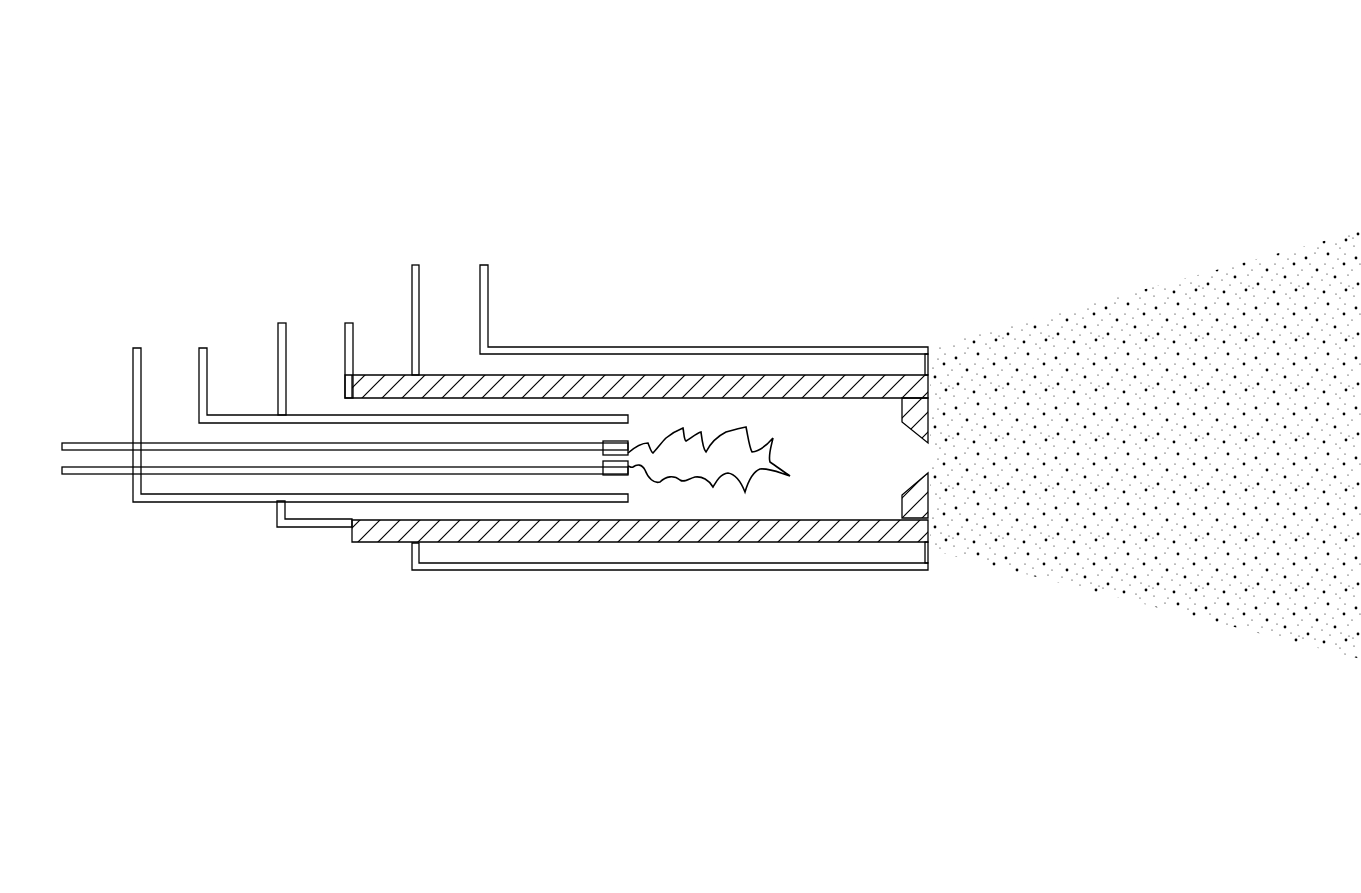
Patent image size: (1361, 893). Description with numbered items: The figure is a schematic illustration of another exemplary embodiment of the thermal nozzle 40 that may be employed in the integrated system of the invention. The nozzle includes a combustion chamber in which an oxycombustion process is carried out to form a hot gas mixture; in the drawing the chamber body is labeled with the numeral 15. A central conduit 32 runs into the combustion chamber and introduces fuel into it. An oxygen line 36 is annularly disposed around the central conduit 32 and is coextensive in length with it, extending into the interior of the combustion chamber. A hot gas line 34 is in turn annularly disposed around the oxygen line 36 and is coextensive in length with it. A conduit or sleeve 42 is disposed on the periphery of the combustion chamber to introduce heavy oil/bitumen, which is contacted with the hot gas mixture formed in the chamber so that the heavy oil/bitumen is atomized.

The thermal nozzle 40 is at (800, 83).
The conduit or sleeve 42 is at (548, 347).
The housing / combustion chamber 15 is at (793, 375).
The central conduit 32 is at (90, 476).
The oxygen line 36 is at (195, 501).
The hot gas line 34 is at (323, 527).